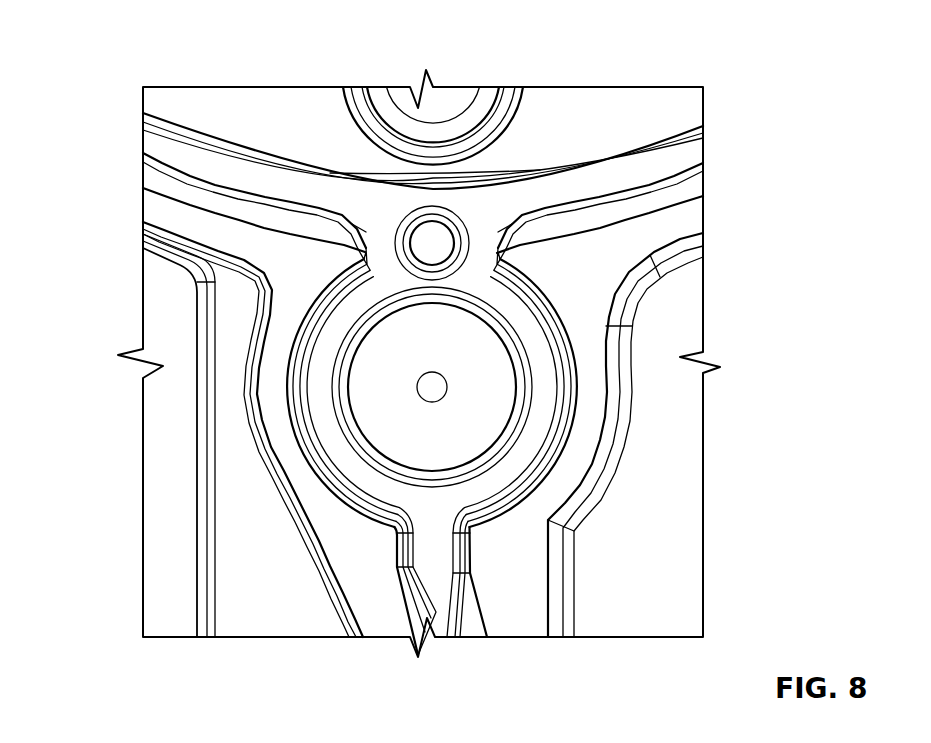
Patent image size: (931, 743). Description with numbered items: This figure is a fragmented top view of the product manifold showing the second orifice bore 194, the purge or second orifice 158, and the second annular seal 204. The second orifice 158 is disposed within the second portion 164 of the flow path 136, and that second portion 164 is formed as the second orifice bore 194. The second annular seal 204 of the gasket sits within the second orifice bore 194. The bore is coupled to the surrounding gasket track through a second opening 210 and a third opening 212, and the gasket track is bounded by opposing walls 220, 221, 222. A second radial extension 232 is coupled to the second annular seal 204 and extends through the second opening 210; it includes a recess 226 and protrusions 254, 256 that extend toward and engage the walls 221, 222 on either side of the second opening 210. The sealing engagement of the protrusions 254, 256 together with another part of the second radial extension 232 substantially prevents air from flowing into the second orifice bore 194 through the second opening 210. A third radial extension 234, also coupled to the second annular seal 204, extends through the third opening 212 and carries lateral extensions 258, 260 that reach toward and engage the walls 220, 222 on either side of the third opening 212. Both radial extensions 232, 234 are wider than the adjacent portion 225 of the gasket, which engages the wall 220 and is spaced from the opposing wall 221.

The wall 220 is at (205, 133).
The portion of the gasket 225 is at (260, 177).
The second opening 210 is at (310, 217).
The protrusion 254 is at (363, 227).
The recess 226 is at (435, 232).
The second radial extension 232 is at (483, 223).
The protrusion 256 is at (505, 215).
The wall 222 is at (612, 203).
The wall 221 is at (187, 197).
The second orifice 158 is at (400, 343).
The flow path 136 is at (427, 387).
The second annular seal 204 is at (320, 423).
The second orifice bore 194 is at (302, 462).
The third opening 212 is at (405, 545).
The lateral extension 258 is at (400, 562).
The second portion of the flow path 164 is at (573, 438).
The third radial extension 234 is at (460, 538).
The lateral extension 260 is at (463, 557).